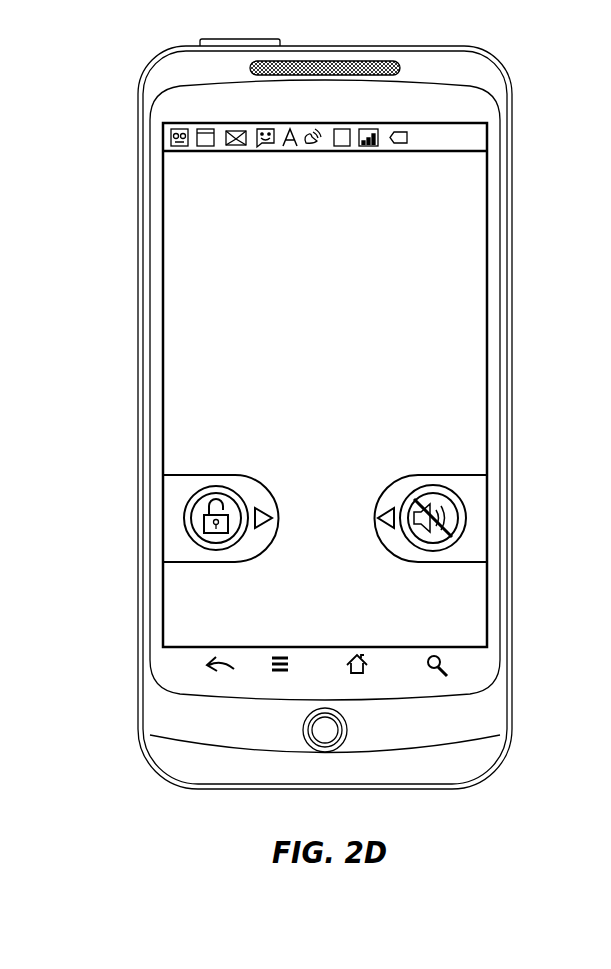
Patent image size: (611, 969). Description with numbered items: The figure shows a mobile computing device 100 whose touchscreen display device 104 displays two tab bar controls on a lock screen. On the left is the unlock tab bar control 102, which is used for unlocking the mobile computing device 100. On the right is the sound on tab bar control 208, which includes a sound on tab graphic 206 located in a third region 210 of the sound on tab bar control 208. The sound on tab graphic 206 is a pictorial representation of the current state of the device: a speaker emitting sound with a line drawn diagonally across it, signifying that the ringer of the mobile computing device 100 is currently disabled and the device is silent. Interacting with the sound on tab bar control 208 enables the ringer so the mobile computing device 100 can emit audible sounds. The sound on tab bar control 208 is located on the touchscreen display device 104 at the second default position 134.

The mobile computing device 100 is at (153, 76).
The touchscreen display device 104 is at (483, 190).
The unlock tab bar control 102 is at (216, 475).
The sound on tab graphic 206 is at (437, 505).
The sound on tab bar control 208 is at (381, 497).
The third region 210 is at (412, 540).
The second default position 134 is at (431, 565).